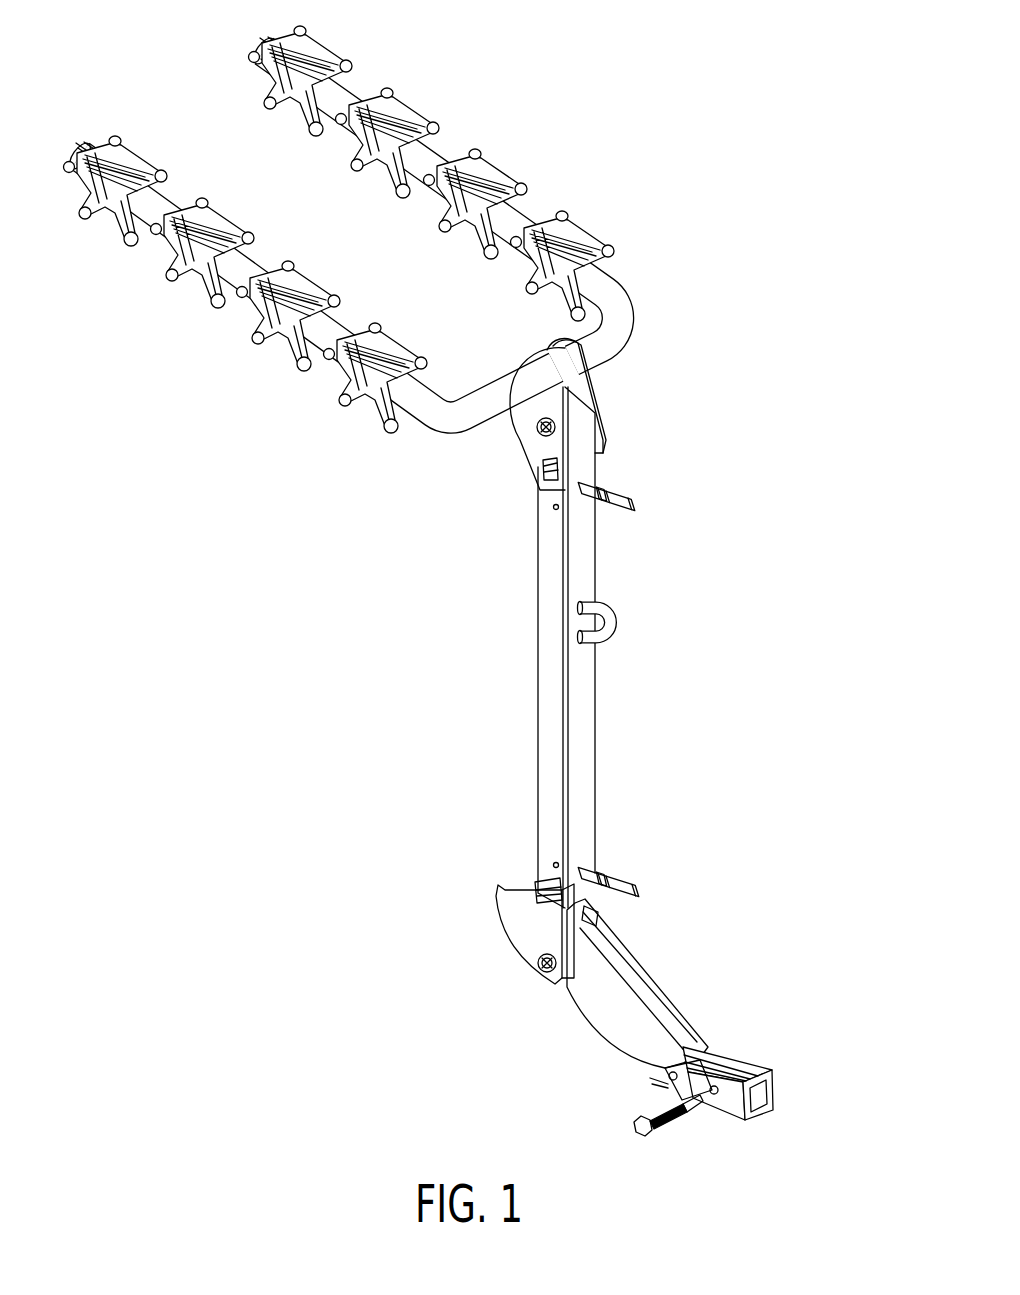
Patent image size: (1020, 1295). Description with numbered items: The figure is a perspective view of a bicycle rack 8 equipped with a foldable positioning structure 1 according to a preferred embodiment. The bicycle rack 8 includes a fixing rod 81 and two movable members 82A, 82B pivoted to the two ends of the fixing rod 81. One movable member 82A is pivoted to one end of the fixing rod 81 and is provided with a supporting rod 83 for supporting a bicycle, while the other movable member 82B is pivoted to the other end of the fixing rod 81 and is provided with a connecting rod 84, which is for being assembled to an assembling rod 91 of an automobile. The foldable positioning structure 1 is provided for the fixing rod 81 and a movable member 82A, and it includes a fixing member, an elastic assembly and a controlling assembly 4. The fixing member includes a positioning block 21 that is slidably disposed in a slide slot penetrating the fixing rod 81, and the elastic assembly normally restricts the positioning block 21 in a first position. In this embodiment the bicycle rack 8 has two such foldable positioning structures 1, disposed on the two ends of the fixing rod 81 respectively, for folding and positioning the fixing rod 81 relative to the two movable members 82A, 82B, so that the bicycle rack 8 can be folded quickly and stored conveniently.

The foldable positioning structure 1 is at (616, 470).
The controlling assembly 4 is at (617, 507).
The bicycle rack 8 is at (656, 228).
The positioning block 21 is at (550, 465).
The fixing rod 81 is at (583, 702).
The movable member 82A is at (580, 380).
The movable member 82B is at (528, 933).
The supporting rod 83 is at (522, 223).
The connecting rod 84 is at (677, 1033).
The assembling rod 91 is at (738, 1056).